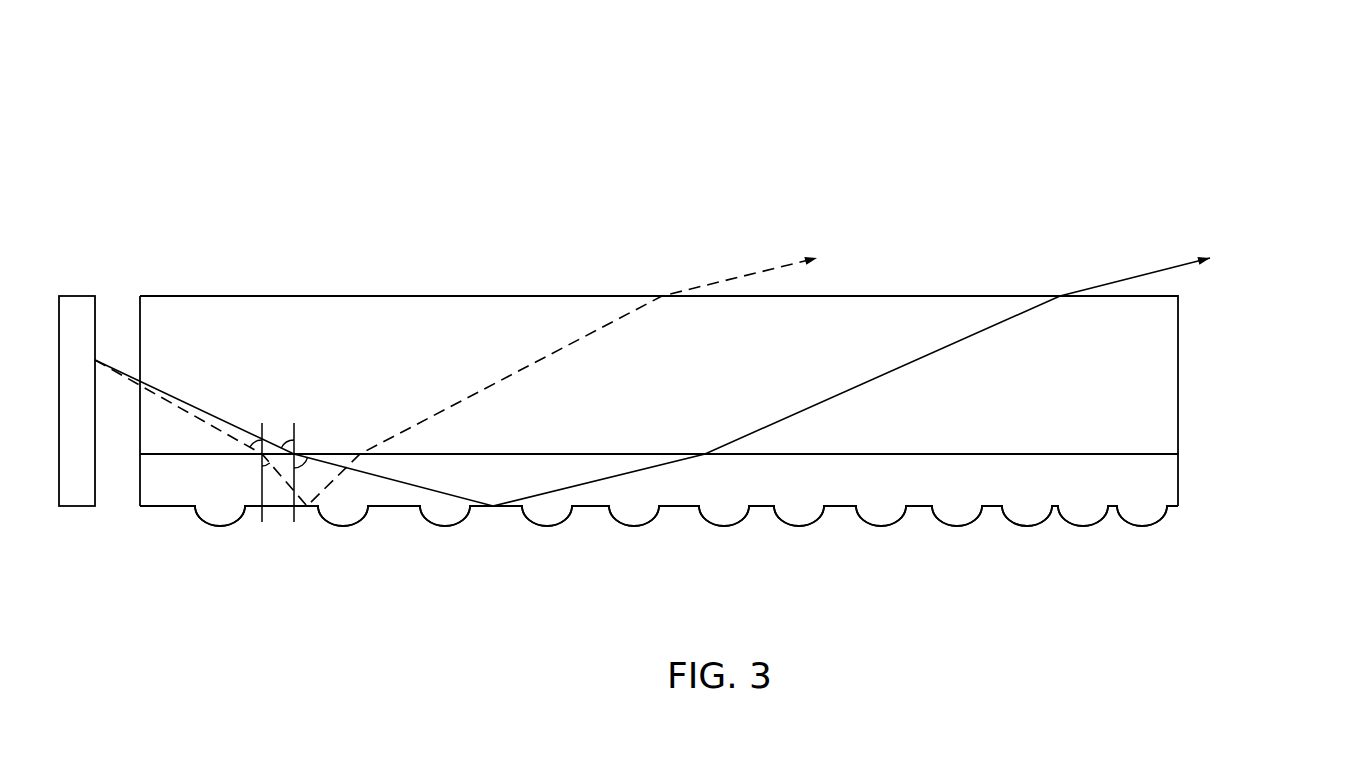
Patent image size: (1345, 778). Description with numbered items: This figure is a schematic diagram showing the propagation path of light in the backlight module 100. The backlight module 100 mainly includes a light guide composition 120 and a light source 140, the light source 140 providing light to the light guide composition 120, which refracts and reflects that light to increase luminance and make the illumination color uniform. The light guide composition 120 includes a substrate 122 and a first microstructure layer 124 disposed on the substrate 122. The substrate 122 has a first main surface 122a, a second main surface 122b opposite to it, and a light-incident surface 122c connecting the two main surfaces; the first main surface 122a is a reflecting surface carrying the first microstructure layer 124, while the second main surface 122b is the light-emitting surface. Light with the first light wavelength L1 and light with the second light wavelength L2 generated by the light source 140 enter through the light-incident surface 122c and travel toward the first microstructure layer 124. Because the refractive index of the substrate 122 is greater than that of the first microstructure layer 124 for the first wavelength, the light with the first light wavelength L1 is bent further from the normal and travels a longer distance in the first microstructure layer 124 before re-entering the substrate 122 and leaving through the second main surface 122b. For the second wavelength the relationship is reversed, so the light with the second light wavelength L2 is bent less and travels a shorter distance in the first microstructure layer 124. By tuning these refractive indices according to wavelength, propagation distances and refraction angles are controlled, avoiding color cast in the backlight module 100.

The backlight module 100 is at (107, 102).
The light source 140 is at (75, 308).
The light guide composition 120 is at (742, 411).
The substrate 122 is at (1167, 378).
The first microstructure layer 124 is at (705, 490).
The first main surface 122a is at (885, 455).
The second main surface 122b is at (341, 295).
The light-incident surface 122c is at (131, 308).
The light with the first light wavelength L1 is at (945, 342).
The light with the second light wavelength L2 is at (559, 338).